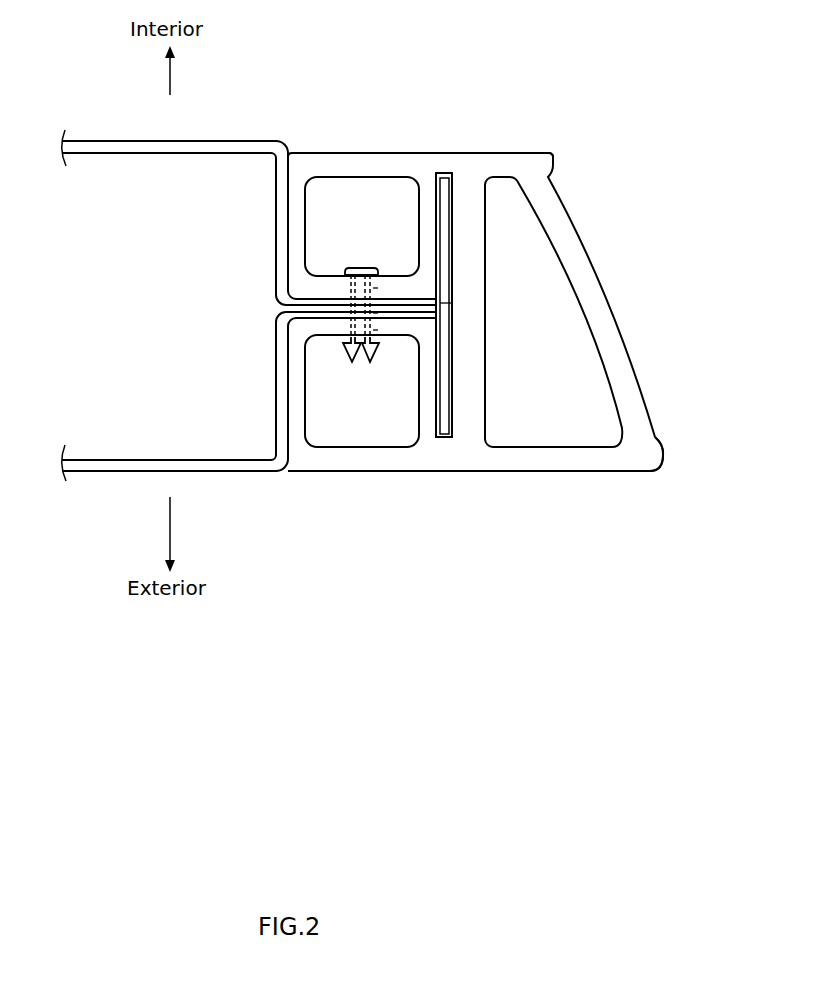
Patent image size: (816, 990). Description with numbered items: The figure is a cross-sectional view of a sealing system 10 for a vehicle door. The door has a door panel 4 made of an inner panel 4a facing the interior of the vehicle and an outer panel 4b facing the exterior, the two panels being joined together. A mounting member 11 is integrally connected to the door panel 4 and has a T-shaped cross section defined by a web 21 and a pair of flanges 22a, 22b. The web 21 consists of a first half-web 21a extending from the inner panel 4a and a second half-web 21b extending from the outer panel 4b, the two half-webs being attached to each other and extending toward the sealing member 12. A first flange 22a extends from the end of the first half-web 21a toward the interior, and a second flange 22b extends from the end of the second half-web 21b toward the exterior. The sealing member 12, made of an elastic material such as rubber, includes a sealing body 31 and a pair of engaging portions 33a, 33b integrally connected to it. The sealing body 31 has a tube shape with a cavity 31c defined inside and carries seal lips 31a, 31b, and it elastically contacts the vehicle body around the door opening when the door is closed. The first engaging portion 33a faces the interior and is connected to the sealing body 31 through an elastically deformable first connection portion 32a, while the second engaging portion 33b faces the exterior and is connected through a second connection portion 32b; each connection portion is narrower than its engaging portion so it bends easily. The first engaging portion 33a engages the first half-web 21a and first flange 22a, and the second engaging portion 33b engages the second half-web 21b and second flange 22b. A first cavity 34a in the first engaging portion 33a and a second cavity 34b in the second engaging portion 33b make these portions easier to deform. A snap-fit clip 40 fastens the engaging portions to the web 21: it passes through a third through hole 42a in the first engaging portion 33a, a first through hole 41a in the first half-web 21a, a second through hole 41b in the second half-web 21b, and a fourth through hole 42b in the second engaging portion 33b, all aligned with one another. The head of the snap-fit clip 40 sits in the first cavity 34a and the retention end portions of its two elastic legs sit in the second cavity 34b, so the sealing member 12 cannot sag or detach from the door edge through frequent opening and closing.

The sealing system 10 is at (583, 27).
The door panel 4 is at (90, 281).
The inner panel 4a is at (160, 148).
The outer panel 4b is at (172, 463).
The first engaging portion 33a is at (362, 179).
The second engaging portion 33b is at (469, 437).
The first cavity 34a is at (391, 208).
The second cavity 34b is at (391, 428).
The web 21 is at (317, 344).
The first half-web 21a is at (325, 303).
The second half-web 21b is at (333, 313).
The sealing member 12 is at (446, 146).
The first flange 22a is at (443, 225).
The second flange 22b is at (443, 415).
The first connection portion 32a is at (445, 167).
The second connection portion 32b is at (443, 458).
The mounting member 11 is at (462, 304).
The sealing body 31 is at (586, 310).
The seal lip 31a is at (557, 160).
The seal lip 31b is at (663, 453).
The cavity 31c is at (569, 401).
The snap-fit clip 40 is at (362, 262).
The first through hole 41a is at (373, 300).
The second through hole 41b is at (373, 313).
The third through hole 42a is at (373, 288).
The fourth through hole 42b is at (373, 330).